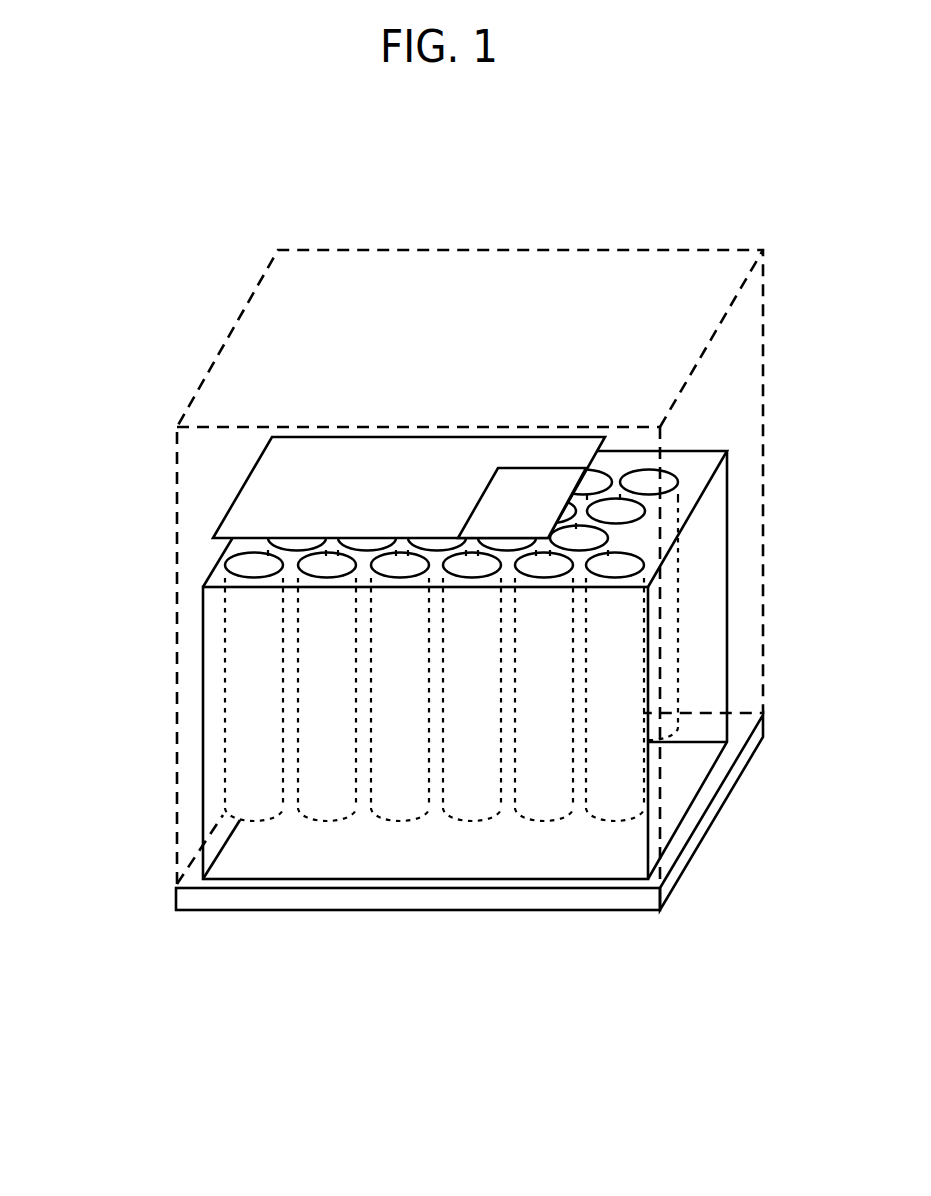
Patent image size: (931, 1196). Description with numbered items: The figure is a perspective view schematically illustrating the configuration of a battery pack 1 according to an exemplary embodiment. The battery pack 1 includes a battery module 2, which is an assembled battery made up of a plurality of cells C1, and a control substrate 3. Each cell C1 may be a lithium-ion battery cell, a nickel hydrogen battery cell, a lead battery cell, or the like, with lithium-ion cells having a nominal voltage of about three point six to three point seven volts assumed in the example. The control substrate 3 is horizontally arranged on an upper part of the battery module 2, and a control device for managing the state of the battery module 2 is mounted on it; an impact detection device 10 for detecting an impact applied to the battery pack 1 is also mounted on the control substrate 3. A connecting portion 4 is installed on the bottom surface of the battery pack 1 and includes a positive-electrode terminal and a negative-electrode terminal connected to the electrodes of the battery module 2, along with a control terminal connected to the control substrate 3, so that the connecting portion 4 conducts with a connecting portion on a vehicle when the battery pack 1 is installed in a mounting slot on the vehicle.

The battery pack 1 is at (502, 213).
The battery module 2 is at (212, 572).
The control substrate 3 is at (242, 487).
The connecting portion 4 is at (415, 912).
The impact detection device 10 is at (560, 468).
The cell C1 is at (226, 655).